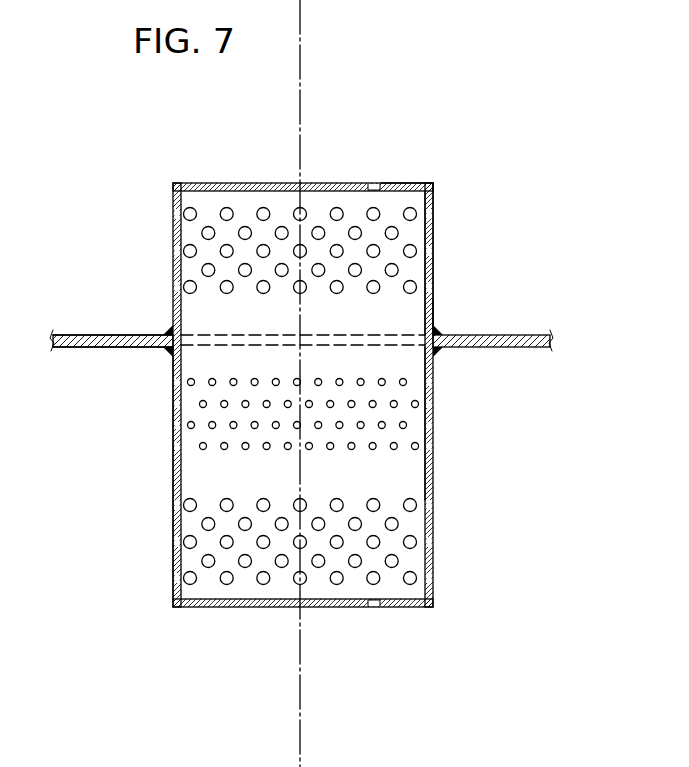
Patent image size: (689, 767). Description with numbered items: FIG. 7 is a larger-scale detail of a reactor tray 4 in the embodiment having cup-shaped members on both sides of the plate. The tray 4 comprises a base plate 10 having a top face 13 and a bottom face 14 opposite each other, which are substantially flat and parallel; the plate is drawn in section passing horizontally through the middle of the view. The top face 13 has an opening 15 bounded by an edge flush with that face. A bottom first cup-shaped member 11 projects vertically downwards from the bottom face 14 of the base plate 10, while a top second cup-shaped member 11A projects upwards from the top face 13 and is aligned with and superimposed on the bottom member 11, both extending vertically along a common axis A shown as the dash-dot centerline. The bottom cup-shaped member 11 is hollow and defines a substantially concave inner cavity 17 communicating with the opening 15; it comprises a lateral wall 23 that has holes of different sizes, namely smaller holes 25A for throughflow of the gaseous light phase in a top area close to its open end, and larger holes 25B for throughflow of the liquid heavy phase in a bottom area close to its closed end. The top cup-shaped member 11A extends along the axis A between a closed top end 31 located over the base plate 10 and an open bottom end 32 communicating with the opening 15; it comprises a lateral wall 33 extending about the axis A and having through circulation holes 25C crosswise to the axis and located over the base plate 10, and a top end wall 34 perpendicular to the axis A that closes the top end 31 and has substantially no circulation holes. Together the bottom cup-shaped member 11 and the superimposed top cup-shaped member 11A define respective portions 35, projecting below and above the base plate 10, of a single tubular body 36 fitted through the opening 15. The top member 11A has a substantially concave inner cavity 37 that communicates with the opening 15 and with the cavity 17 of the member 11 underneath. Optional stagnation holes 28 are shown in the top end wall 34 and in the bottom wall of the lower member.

The axis A is at (300, 139).
The tray 4 is at (60, 335).
The base plate 10 is at (445, 347).
The bottom first cup-shaped member 11 is at (433, 487).
The top second cup-shaped member 11A is at (433, 199).
The top face 13 is at (98, 334).
The bottom face 14 is at (98, 348).
The opening 15 is at (433, 312).
The inner cavity 17 is at (433, 384).
The lateral wall 23 is at (173, 486).
The smaller holes 25A is at (176, 388).
The larger holes 25B is at (173, 505).
The through circulation holes 25C is at (177, 248).
The stagnation holes 28 is at (374, 183).
The closed top end 31 is at (193, 183).
The open bottom end 32 is at (169, 330).
The lateral wall 33 is at (433, 230).
The top end wall 34 is at (400, 183).
The portions 35 is at (433, 268).
The tubular body 36 is at (433, 392).
The inner cavity 37 is at (186, 228).